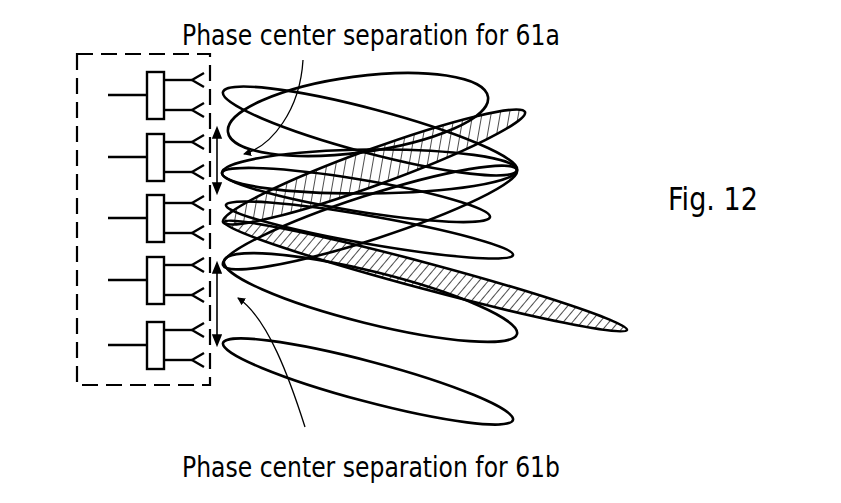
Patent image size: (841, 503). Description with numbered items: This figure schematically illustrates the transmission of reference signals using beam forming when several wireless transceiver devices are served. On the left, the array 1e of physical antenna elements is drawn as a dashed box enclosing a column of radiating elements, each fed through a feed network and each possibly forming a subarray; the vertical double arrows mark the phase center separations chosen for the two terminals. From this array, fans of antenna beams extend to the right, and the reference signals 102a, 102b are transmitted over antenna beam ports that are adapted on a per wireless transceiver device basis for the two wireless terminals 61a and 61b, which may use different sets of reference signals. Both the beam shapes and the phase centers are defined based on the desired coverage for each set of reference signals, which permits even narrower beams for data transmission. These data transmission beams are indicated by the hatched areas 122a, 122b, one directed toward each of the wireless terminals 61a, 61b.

The array of physical antenna elements 1e is at (77, 213).
The wireless terminal 61a is at (424, 145).
The wireless terminal 61b is at (464, 255).
The hatched area 122a is at (482, 130).
The hatched area 122b is at (552, 310).
The reference signals 102a is at (340, 330).
The reference signals 102b is at (515, 420).